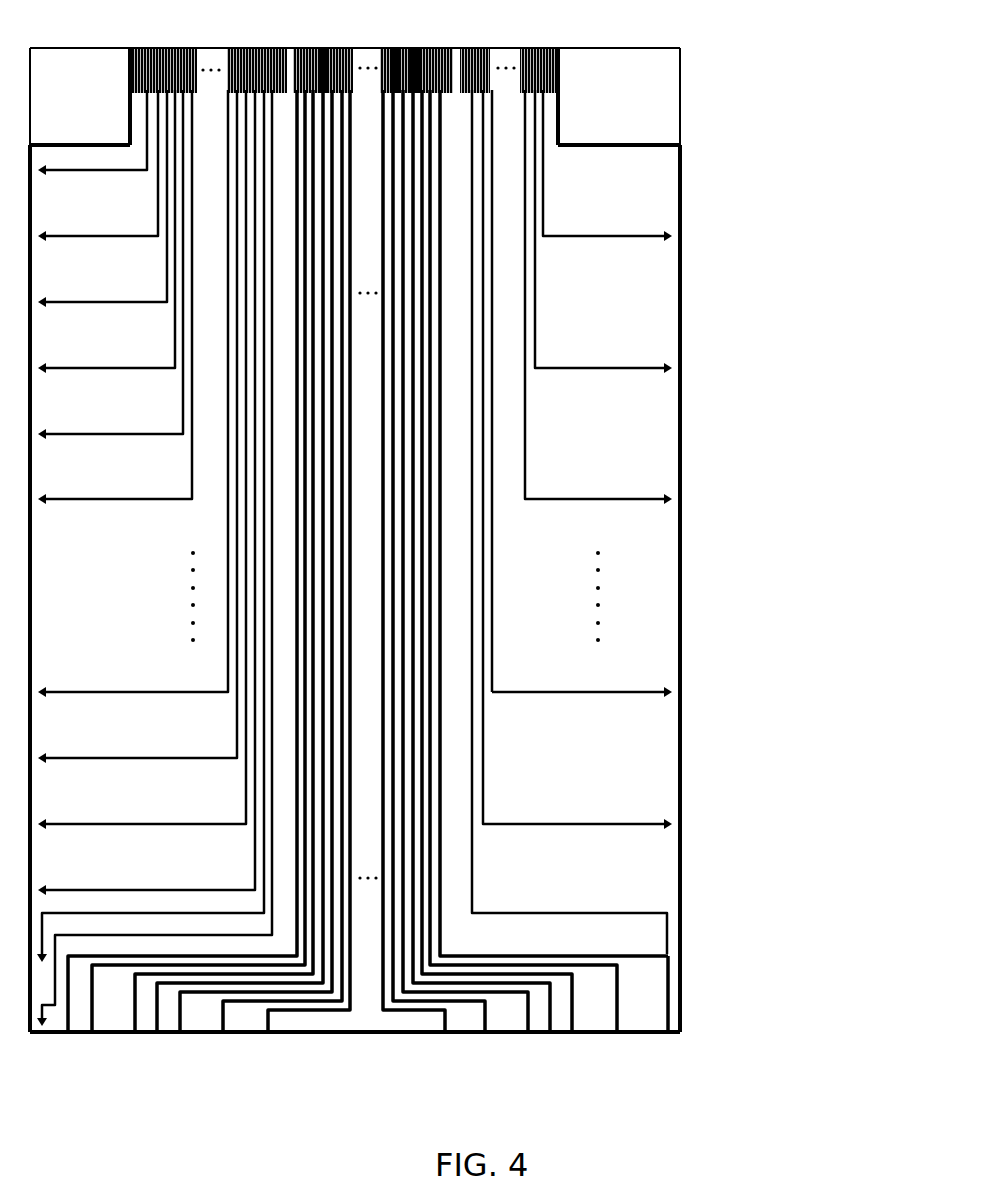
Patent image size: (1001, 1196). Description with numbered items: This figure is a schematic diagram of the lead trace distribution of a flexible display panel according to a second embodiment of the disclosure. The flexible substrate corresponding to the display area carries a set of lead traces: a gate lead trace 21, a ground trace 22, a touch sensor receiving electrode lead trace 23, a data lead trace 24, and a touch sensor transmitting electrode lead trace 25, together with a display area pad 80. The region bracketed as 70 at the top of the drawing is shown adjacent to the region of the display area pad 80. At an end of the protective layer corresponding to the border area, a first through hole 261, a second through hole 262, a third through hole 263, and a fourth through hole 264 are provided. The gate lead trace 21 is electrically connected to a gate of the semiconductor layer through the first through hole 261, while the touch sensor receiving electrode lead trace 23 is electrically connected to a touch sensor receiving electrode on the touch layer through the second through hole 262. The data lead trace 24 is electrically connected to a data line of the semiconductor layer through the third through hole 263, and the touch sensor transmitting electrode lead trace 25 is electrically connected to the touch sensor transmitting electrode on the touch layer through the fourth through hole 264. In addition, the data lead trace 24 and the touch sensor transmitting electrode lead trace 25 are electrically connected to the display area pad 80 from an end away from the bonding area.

The gate lead trace 21 is at (492, 463).
The ground trace 22 is at (560, 85).
The touch sensor receiving electrode lead trace 23 is at (415, 63).
The data lead trace 24 is at (395, 63).
The touch sensor transmitting electrode lead trace 25 is at (323, 63).
The first through hole 261 is at (668, 499).
The second through hole 262 is at (668, 692).
The third through hole 263 is at (668, 824).
The fourth through hole 264 is at (668, 956).
The bonding region 70 is at (870, 48).
The display area pad 80 is at (870, 1035).